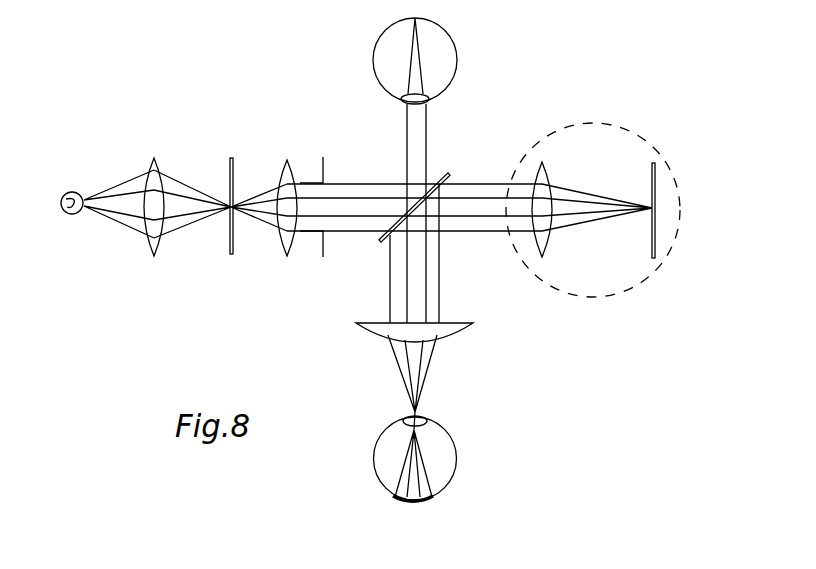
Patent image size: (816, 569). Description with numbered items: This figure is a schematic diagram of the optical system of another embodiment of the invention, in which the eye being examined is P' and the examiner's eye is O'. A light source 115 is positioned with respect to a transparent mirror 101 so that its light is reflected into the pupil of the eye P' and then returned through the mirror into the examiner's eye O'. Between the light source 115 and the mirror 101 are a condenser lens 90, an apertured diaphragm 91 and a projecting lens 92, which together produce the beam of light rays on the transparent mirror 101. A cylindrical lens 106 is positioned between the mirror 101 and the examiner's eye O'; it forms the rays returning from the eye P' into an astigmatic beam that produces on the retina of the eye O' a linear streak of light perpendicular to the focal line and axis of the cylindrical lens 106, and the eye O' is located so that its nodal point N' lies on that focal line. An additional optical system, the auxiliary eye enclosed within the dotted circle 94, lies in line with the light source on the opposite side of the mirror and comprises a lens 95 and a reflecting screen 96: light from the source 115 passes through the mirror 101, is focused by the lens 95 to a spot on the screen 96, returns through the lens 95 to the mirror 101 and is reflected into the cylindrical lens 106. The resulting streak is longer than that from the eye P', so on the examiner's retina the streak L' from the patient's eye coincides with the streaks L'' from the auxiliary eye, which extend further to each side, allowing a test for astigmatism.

The condenser lens 90 is at (157, 163).
The apertured diaphragm 91 is at (234, 159).
The projecting lens 92 is at (290, 163).
The auxiliary eye 94 is at (577, 298).
The lens 95 is at (542, 162).
The reflecting screen 96 is at (657, 168).
The transparent mirror 101 is at (442, 172).
The cylindrical lens 106 is at (382, 330).
The light source 115 is at (68, 215).
The eye being examined P' is at (435, 61).
The examiner's eye O' is at (396, 455).
The nodal point N' is at (446, 422).
The light streak L' is at (408, 522).
The streaks L'' is at (403, 516).